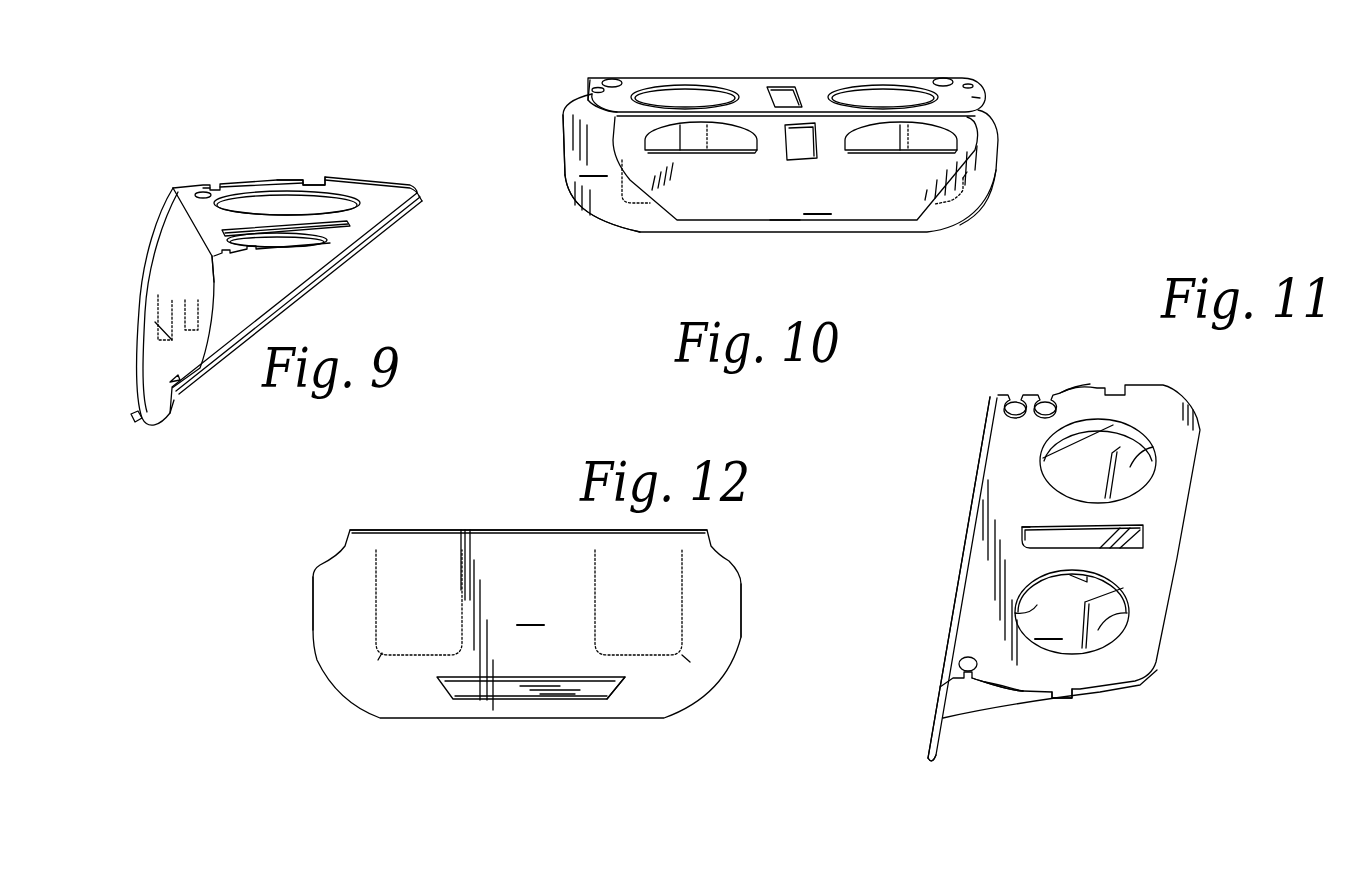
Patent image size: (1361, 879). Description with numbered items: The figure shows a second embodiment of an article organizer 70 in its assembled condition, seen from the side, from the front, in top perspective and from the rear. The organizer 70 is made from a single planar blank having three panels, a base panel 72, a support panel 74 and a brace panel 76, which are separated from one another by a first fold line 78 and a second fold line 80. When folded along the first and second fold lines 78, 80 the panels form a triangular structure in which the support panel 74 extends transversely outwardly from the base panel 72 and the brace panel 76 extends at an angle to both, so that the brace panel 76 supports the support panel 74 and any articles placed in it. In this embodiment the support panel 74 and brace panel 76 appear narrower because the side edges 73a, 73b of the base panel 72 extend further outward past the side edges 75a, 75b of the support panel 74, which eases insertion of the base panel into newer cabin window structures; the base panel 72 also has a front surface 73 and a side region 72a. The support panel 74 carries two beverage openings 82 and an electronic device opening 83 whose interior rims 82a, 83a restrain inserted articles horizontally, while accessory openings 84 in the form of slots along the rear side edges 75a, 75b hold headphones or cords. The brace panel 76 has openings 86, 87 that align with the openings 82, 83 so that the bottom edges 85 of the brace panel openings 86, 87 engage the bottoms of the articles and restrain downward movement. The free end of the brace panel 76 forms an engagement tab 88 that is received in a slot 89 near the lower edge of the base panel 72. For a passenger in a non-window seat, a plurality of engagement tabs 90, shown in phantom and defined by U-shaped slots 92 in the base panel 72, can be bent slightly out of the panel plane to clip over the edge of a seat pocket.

In FIG. 9, the article organizer 70 is at (128, 262).
In FIG. 9, the base panel 72 is at (155, 322).
In FIG. 10, the base panel 72 is at (780, 163).
In FIG. 11, the base panel 72 is at (935, 720).
In FIG. 12, the base panel 72 is at (527, 624).
In FIG. 12, the base side 72a is at (742, 610).
In FIG. 9, the front surface 73 is at (208, 285).
In FIG. 10, the front surface 73 is at (622, 217).
In FIG. 11, the front surface 73 is at (940, 740).
In FIG. 10, the side edge 73a is at (568, 180).
In FIG. 11, the side edge 73a is at (930, 762).
In FIG. 10, the side edge 73b is at (978, 207).
In FIG. 12, the side edge 73b is at (313, 623).
In FIG. 9, the support panel 74 is at (296, 186).
In FIG. 10, the support panel 74 is at (815, 85).
In FIG. 11, the support panel 74 is at (1178, 472).
In FIG. 9, the side edge 75a is at (277, 180).
In FIG. 11, the side edge 75a is at (1040, 691).
In FIG. 11, the side edge 75b is at (1080, 386).
In FIG. 9, the brace panel 76 is at (300, 276).
In FIG. 10, the brace panel 76 is at (795, 168).
In FIG. 11, the brace panel 76 is at (1023, 652).
In FIG. 9, the first fold line 78 is at (175, 188).
In FIG. 12, the first fold line 78 is at (527, 530).
In FIG. 9, the second fold line 80 is at (420, 197).
In FIG. 10, the second fold line 80 is at (970, 115).
In FIG. 11, the second fold line 80 is at (1176, 563).
In FIG. 9, the support panel beverage opening 82 is at (297, 203).
In FIG. 10, the support panel beverage opening 82 is at (677, 97).
In FIG. 11, the support panel beverage opening 82 is at (1082, 453).
In FIG. 11, the interior rim 82a is at (1133, 428).
In FIG. 9, the support panel electronic device opening 83 is at (342, 226).
In FIG. 10, the support panel electronic device opening 83 is at (785, 95).
In FIG. 11, the support panel electronic device opening 83 is at (1140, 520).
In FIG. 11, the interior rim 83a is at (1040, 530).
In FIG. 9, the accessory opening 84 is at (204, 192).
In FIG. 10, the accessory opening 84 is at (594, 92).
In FIG. 11, the accessory opening 84 is at (1015, 400).
In FIG. 10, the bottom edge 85 is at (890, 153).
In FIG. 11, the bottom edge 85 is at (1090, 620).
In FIG. 10, the brace panel opening 86 is at (686, 140).
In FIG. 11, the brace panel opening 86 is at (1133, 458).
In FIG. 10, the brace panel opening 87 is at (803, 140).
In FIG. 9, the engagement tab 88 is at (134, 421).
In FIG. 11, the engagement tab 88 is at (968, 664).
In FIG. 12, the engagement tab 88 is at (495, 690).
In FIG. 9, the slot 89 is at (175, 382).
In FIG. 10, the slot 89 is at (787, 222).
In FIG. 12, the slot 89 is at (622, 672).
In FIG. 9, the engagement tab 90 is at (190, 315).
In FIG. 10, the engagement tab 90 is at (953, 193).
In FIG. 12, the engagement tab 90 is at (409, 590).
In FIG. 9, the U-shaped slot 92 is at (165, 345).
In FIG. 10, the U-shaped slot 92 is at (963, 187).
In FIG. 12, the U-shaped slot 92 is at (382, 653).